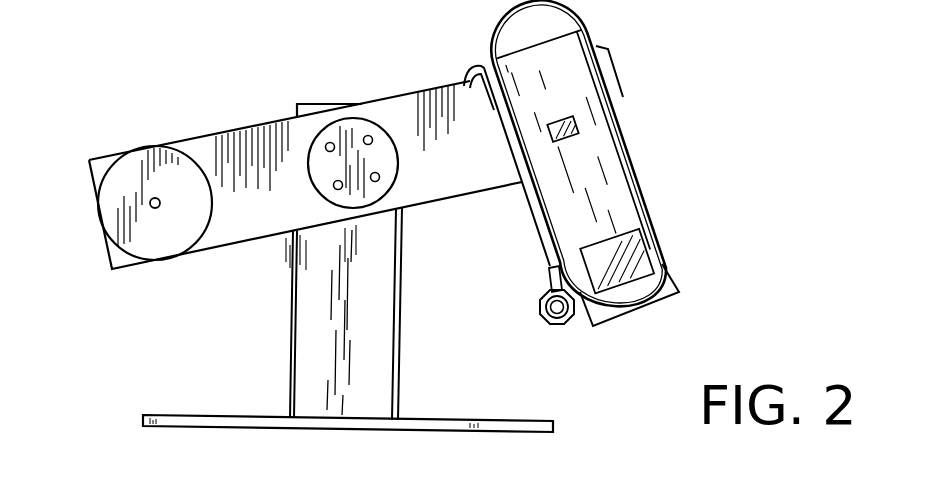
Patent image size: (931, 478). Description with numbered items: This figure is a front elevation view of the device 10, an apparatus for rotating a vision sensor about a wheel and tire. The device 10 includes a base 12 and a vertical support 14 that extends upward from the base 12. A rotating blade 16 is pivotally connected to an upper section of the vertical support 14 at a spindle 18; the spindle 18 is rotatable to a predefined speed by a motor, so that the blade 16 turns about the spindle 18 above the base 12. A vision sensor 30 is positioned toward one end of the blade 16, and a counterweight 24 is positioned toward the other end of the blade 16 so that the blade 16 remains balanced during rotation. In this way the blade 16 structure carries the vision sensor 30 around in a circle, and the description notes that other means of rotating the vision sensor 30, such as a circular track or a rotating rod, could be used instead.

The device 10 is at (163, 122).
The base 12 is at (247, 422).
The vertical support 14 is at (375, 292).
The rotating blade 16 is at (267, 140).
The spindle 18 is at (385, 150).
The counterweight 24 is at (157, 242).
The vision sensor 30 is at (600, 160).